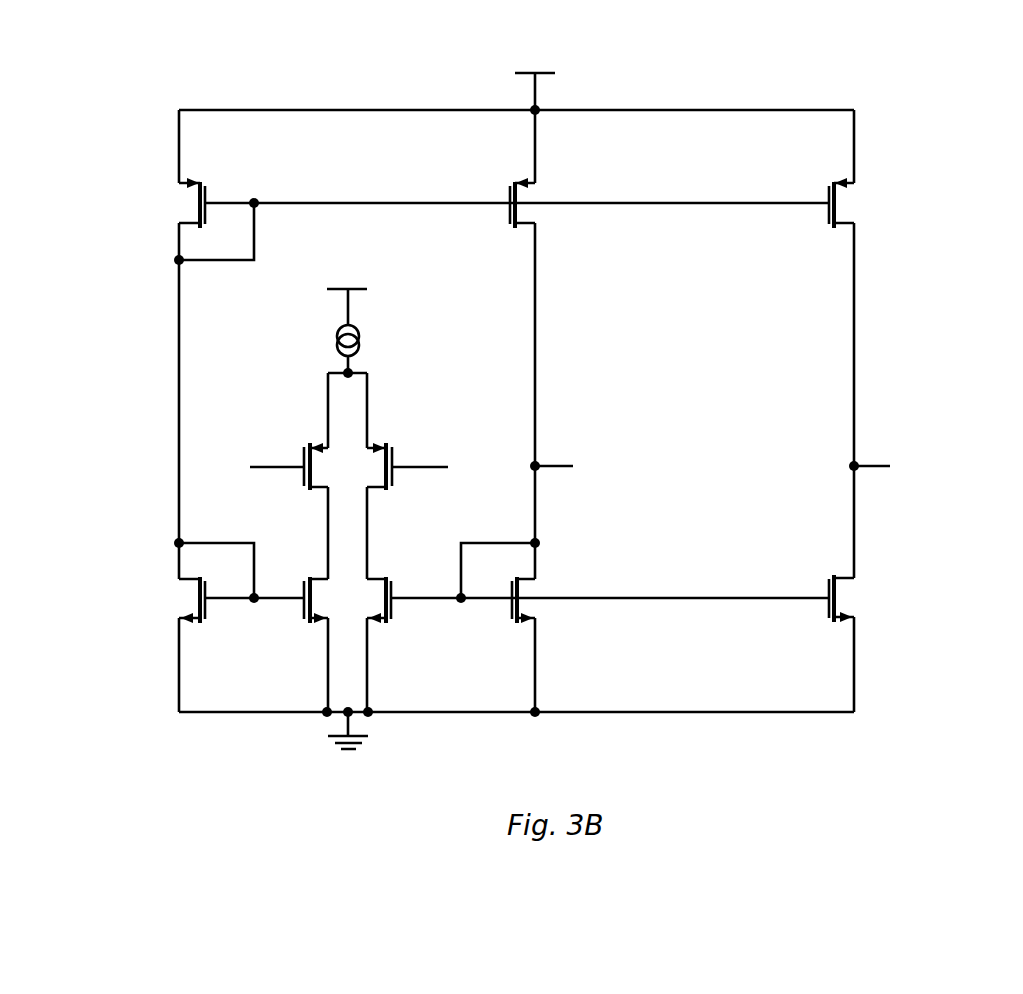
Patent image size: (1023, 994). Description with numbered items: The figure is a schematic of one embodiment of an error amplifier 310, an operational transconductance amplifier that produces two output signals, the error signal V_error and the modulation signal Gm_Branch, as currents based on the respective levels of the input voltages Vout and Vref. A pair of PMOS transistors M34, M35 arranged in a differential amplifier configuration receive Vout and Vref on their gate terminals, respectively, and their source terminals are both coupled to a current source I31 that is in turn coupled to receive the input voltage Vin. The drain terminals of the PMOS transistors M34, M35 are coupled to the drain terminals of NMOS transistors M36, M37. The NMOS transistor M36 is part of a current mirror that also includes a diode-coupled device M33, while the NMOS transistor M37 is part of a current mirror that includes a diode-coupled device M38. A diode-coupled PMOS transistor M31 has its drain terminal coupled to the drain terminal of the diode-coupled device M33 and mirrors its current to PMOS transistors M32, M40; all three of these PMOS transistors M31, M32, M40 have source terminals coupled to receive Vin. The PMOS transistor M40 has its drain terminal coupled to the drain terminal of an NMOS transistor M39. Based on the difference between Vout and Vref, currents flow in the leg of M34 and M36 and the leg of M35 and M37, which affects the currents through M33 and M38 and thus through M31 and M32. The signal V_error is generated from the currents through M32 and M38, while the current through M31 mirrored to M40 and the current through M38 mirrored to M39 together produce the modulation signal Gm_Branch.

The error amplifier 310 is at (567, 388).
The diode-coupled PMOS transistor M31 is at (195, 203).
The PMOS transistor M32 is at (508, 194).
The diode-coupled device M33 is at (169, 600).
The PMOS transistor M34 is at (304, 456).
The PMOS transistor M35 is at (391, 456).
The NMOS transistor M36 is at (303, 589).
The NMOS transistor M37 is at (391, 589).
The diode-coupled device M38 is at (509, 610).
The NMOS transistor M39 is at (863, 598).
The PMOS transistor M40 is at (863, 203).
The current source I31 is at (363, 331).